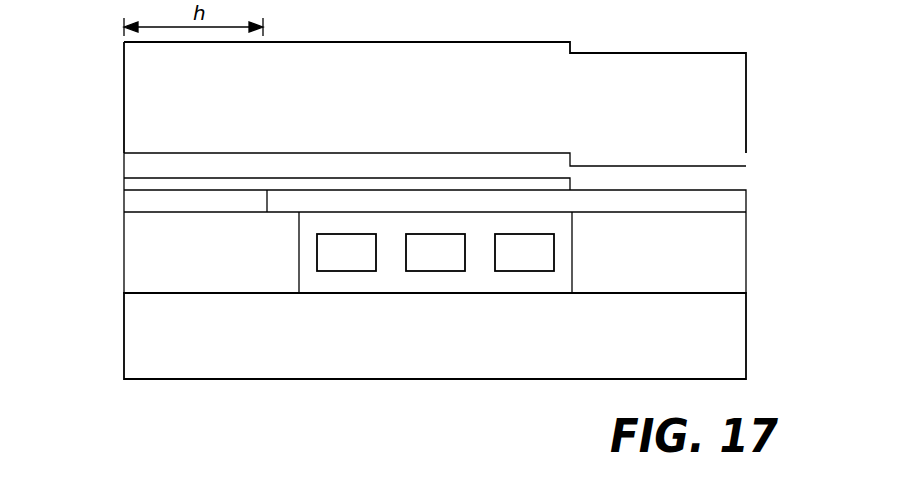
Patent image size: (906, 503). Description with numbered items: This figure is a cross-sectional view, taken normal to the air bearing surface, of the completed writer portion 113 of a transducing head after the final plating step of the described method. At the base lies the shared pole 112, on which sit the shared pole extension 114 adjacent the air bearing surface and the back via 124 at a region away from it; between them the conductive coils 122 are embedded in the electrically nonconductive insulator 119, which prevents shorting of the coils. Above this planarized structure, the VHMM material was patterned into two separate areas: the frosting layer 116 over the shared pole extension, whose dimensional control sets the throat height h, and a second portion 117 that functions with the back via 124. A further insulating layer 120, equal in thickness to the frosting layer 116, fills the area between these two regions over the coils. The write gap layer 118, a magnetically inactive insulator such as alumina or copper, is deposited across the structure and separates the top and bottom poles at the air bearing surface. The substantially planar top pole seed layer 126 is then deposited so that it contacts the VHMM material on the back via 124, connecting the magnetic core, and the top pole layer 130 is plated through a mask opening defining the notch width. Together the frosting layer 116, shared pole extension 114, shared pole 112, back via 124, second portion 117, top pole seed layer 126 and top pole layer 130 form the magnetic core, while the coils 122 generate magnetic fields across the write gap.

The shared pole 112 is at (435, 336).
The writer portion 113 is at (284, 397).
The shared pole extension 114 is at (211, 252).
The frosting layer 116 is at (136, 204).
The second portion 117 is at (735, 203).
The write gap layer 118 is at (130, 185).
The insulating layer 119 is at (482, 226).
The insulating layer 120 is at (334, 202).
The conductive coils 122 is at (435, 252).
The back via 124 is at (659, 252).
The top pole seed layer 126 is at (136, 165).
The top pole layer 130 is at (435, 97).